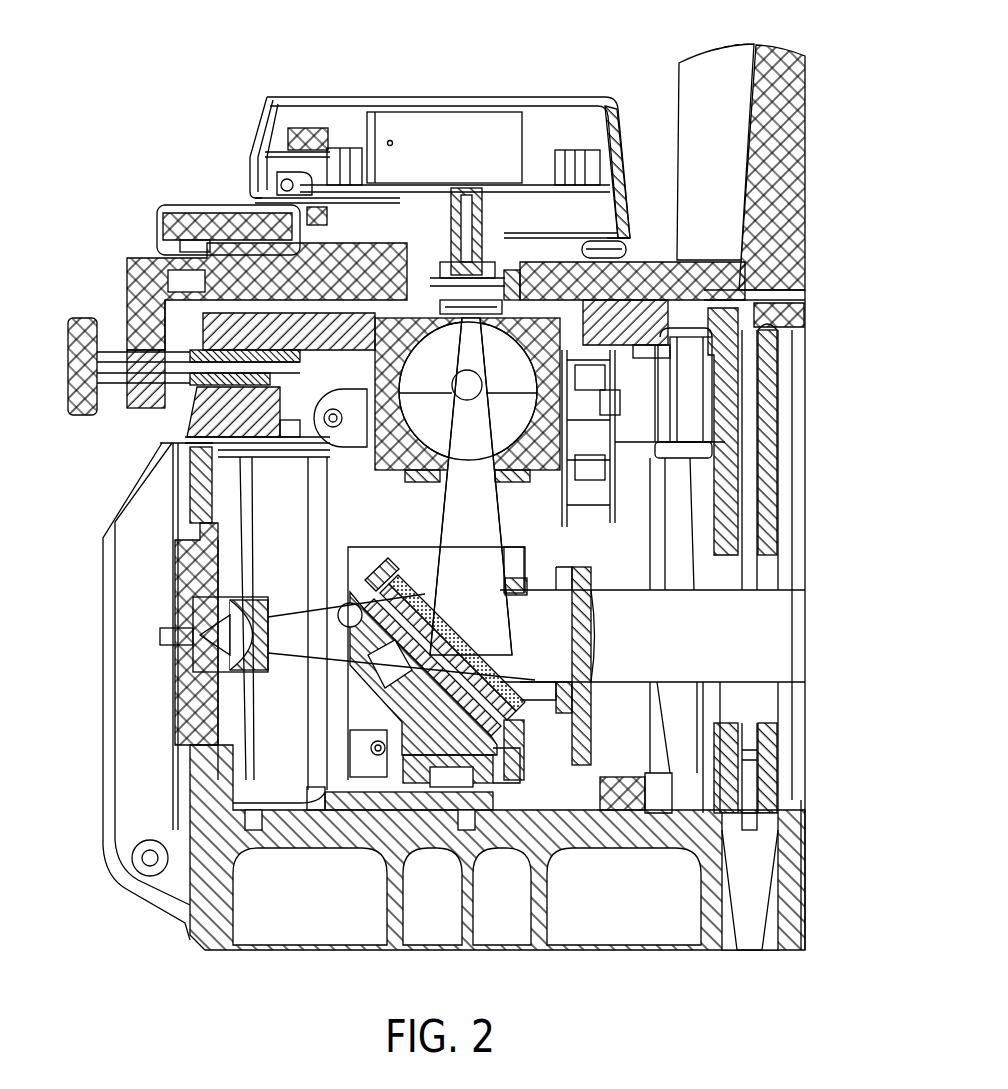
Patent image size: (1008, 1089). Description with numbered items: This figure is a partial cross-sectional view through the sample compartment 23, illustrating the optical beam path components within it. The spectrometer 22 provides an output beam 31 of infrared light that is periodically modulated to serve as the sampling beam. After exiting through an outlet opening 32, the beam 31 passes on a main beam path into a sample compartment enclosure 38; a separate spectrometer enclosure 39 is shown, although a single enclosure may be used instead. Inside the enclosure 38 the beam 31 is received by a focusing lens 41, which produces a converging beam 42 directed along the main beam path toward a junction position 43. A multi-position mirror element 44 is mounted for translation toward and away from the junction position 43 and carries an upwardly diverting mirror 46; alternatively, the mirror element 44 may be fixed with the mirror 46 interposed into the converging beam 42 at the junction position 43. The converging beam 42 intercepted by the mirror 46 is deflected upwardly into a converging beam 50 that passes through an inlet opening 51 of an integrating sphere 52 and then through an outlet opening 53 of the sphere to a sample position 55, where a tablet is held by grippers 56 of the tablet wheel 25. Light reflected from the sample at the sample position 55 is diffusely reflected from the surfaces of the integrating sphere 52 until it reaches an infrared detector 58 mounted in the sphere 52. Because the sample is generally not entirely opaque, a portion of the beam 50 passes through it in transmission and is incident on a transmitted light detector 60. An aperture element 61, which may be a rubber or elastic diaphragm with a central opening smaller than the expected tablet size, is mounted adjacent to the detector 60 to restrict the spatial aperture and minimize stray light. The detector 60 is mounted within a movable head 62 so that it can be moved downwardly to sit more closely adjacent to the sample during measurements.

The spectrometer 22 is at (806, 492).
The sample compartment 23 is at (182, 922).
The tablet wheel 25 is at (672, 257).
The output beam 31 is at (712, 693).
The outlet opening 32 is at (767, 568).
The sample compartment enclosure 38 is at (215, 883).
The spectrometer enclosure 39 is at (789, 831).
The focusing lens 41 is at (595, 673).
The converging beam 42 is at (538, 693).
The junction position 43 is at (512, 592).
The multi-position mirror element 44 is at (432, 720).
The upwardly diverting mirror 46 is at (462, 772).
The converging beam 50 is at (430, 478).
The inlet opening 51 is at (433, 527).
The integrating sphere 52 is at (447, 363).
The outlet opening 53 is at (500, 292).
The sample position 55 is at (540, 257).
The grippers 56 is at (405, 248).
The infrared detector 58 is at (422, 265).
The transmitted light detector 60 is at (455, 278).
The aperture element 61 is at (490, 312).
The movable head 62 is at (432, 262).